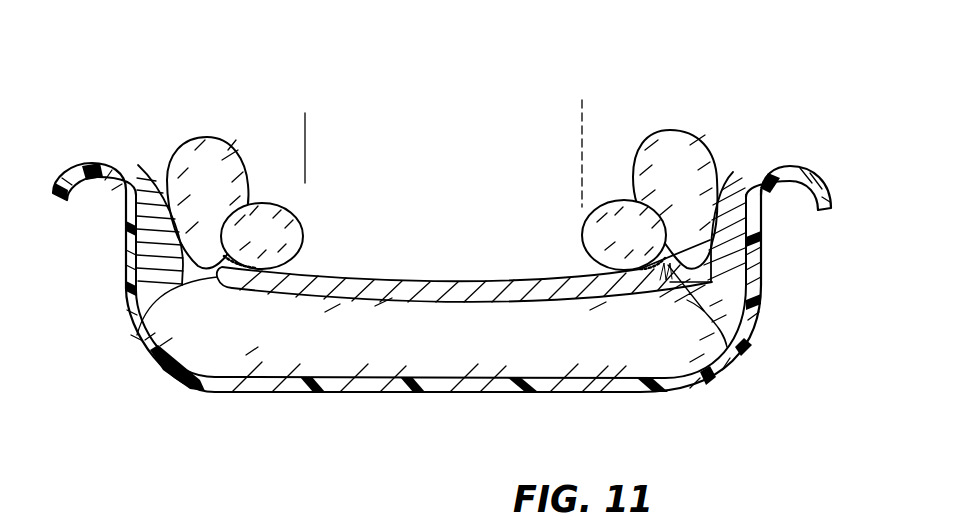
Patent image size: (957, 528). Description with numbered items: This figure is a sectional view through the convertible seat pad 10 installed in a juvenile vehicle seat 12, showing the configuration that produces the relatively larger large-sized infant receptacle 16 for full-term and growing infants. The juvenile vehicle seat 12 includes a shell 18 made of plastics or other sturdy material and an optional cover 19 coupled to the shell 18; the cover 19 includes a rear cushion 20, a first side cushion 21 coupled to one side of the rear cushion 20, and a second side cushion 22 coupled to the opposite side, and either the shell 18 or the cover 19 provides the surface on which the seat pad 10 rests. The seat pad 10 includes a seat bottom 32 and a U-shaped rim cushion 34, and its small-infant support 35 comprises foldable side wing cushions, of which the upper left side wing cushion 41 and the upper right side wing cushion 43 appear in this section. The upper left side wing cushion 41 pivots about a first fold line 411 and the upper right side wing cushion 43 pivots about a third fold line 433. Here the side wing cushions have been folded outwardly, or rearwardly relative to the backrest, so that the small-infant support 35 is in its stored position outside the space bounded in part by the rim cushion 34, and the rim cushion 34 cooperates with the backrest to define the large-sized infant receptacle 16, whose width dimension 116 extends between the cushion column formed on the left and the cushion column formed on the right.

The convertible seat pad 10 is at (186, 88).
The juvenile vehicle seat 12 is at (82, 160).
The large-sized infant receptacle 16 is at (514, 205).
The shell 18 is at (122, 293).
The cover 19 is at (212, 346).
The rear cushion 20 is at (490, 357).
The first side cushion 21 is at (742, 178).
The second side cushion 22 is at (146, 165).
The seat bottom 32 is at (407, 305).
The rim cushion 34 is at (312, 246).
The small-infant support 35 is at (572, 238).
The upper left side wing cushion 41 is at (676, 140).
The upper right side wing cushion 43 is at (238, 138).
The width dimension 116 is at (580, 128).
The first fold line 411 is at (735, 348).
The third fold line 433 is at (137, 300).